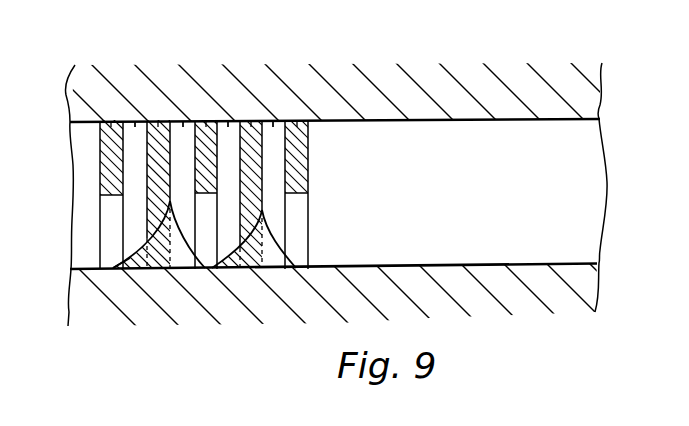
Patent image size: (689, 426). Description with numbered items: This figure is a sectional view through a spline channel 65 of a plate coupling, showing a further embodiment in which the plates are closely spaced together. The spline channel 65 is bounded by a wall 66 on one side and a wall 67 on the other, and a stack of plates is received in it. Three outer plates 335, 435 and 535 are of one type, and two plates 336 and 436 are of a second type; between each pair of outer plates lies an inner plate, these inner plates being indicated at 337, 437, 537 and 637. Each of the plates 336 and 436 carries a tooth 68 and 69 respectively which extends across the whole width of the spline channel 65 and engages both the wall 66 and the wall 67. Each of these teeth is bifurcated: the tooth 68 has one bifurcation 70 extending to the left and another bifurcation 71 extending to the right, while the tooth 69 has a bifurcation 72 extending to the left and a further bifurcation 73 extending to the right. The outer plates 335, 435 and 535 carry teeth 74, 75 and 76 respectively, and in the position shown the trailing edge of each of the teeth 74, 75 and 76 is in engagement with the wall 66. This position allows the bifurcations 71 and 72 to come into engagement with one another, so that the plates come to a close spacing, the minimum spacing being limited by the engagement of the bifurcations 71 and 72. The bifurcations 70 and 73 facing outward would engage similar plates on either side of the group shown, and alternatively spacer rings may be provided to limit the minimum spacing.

The spline channel 65 is at (521, 190).
The wall 66 is at (583, 120).
The wall 67 is at (585, 264).
The tooth 68 is at (150, 204).
The tooth 69 is at (261, 209).
The bifurcation 70 is at (118, 270).
The bifurcation 71 is at (182, 269).
The bifurcation 72 is at (230, 269).
The bifurcation 73 is at (275, 255).
The tooth 74 is at (97, 155).
The tooth 75 is at (208, 162).
The tooth 76 is at (302, 178).
The plate 335 is at (102, 121).
The plate 336 is at (158, 121).
The inner plate 337 is at (137, 121).
The plate 435 is at (207, 121).
The plate 436 is at (252, 121).
The inner plate 437 is at (183, 121).
The plate 535 is at (311, 120).
The inner plate 537 is at (230, 121).
The inner plate 637 is at (278, 121).